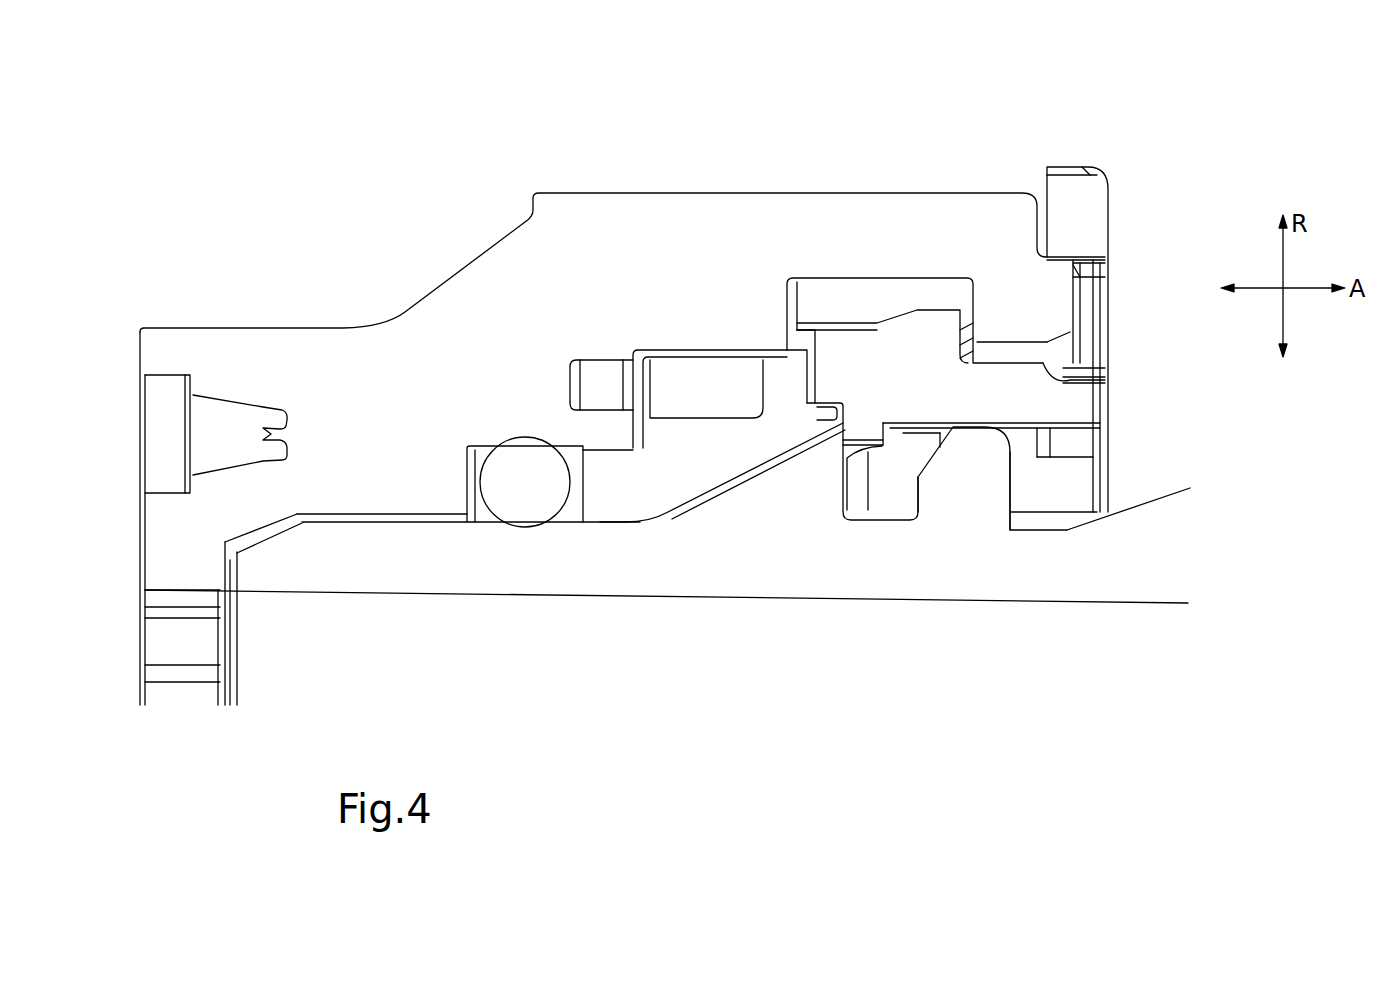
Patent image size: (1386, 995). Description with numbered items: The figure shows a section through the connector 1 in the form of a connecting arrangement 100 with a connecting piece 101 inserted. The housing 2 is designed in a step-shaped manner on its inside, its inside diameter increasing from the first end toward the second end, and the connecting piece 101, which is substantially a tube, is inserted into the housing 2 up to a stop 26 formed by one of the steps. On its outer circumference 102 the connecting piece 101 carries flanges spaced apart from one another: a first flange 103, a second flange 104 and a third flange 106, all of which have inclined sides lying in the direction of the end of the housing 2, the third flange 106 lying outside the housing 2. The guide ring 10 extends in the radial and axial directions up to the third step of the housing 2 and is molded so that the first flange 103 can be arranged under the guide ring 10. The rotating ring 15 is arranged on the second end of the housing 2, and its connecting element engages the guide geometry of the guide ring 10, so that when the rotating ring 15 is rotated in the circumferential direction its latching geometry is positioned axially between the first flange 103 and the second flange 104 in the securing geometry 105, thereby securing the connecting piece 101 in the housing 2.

The connector 1 is at (240, 189).
The housing 2 is at (540, 275).
The guide ring 10 is at (783, 387).
The rotating ring 15 is at (1093, 317).
The stop 26 is at (230, 580).
The connecting arrangement 100 is at (1099, 123).
The connecting piece 101 is at (880, 598).
The outer circumference 102 is at (403, 523).
The first flange 103 is at (788, 502).
The second flange 104 is at (980, 502).
The securing geometry 105 is at (902, 515).
The third flange 106 is at (1168, 503).